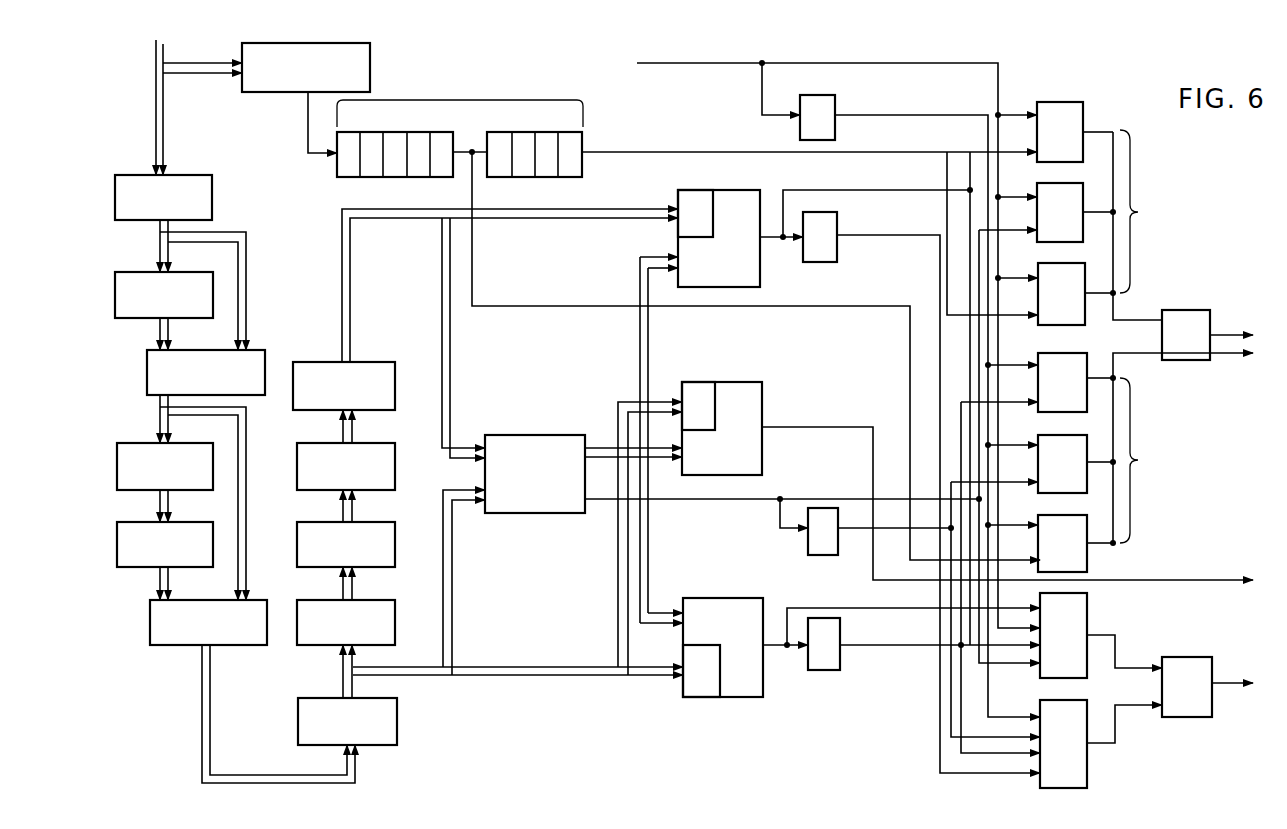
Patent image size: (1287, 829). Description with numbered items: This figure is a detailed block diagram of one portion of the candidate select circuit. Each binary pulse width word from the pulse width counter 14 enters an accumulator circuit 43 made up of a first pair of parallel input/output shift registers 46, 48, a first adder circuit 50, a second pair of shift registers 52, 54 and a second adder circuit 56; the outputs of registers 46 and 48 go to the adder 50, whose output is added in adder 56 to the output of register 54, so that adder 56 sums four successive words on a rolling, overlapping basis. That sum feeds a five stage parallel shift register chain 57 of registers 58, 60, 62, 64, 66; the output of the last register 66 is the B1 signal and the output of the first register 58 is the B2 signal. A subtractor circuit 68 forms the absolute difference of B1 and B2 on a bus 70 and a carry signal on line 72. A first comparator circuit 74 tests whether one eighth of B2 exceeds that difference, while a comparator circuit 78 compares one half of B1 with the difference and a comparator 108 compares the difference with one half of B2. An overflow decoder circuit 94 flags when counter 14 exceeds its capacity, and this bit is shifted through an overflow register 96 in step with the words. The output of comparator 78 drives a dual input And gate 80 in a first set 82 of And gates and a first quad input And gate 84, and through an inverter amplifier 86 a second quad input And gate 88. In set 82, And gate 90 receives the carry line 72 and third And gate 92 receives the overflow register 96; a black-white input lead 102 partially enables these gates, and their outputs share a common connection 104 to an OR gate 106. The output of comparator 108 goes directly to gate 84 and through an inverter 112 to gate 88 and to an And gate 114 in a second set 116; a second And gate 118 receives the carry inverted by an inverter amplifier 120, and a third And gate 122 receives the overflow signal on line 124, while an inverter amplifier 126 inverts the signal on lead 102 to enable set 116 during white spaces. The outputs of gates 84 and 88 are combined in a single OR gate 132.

The pulse width counter 14 is at (164, 42).
The accumulator circuit 43 is at (276, 436).
The parallel input/output shift register 46 is at (213, 197).
The parallel input/output shift register 48 is at (133, 272).
The first adder circuit 50 is at (262, 352).
The parallel input/output shift register 52 is at (133, 443).
The parallel input/output shift register 54 is at (143, 568).
The second adder circuit 56 is at (168, 647).
The parallel input/output shift register chain 57 is at (423, 436).
The parallel input/output shift register 58 is at (305, 698).
The parallel input/output shift register 60 is at (397, 613).
The parallel input/output shift register 62 is at (397, 541).
The parallel input/output shift register 64 is at (396, 472).
The parallel input/output shift register 66 is at (371, 362).
The subtractor circuit 68 is at (545, 513).
The bus 70 is at (643, 352).
The carry line 72 is at (755, 510).
The first comparator circuit 74 is at (762, 400).
The comparator circuit 78 is at (760, 280).
The dual input And gate 80 is at (1070, 102).
The first set of parallel And gates 82 is at (1145, 211).
The first quad input And gate 84 is at (1089, 615).
The inverter amplifier 86 is at (840, 222).
The second quad input And gate 88 is at (1089, 772).
The And gate 90 is at (1075, 183).
The third And gate 92 is at (1073, 263).
The overflow decoder circuit 94 is at (371, 60).
The overflow register 96 is at (456, 100).
The black-white input lead 102 is at (637, 63).
The common connection 104 is at (1137, 320).
The OR gate 106 is at (1200, 310).
The comparator 108 is at (755, 697).
The inverter 112 is at (841, 632).
The And gate 114 is at (1075, 353).
The second set of And gates 116 is at (1183, 448).
The second And gate 118 is at (1045, 435).
The inverter amplifier 120 is at (818, 560).
The third And gate 122 is at (1050, 515).
The line 124 is at (864, 305).
The inverter amplifier 126 is at (835, 102).
The OR gate 132 is at (1180, 657).